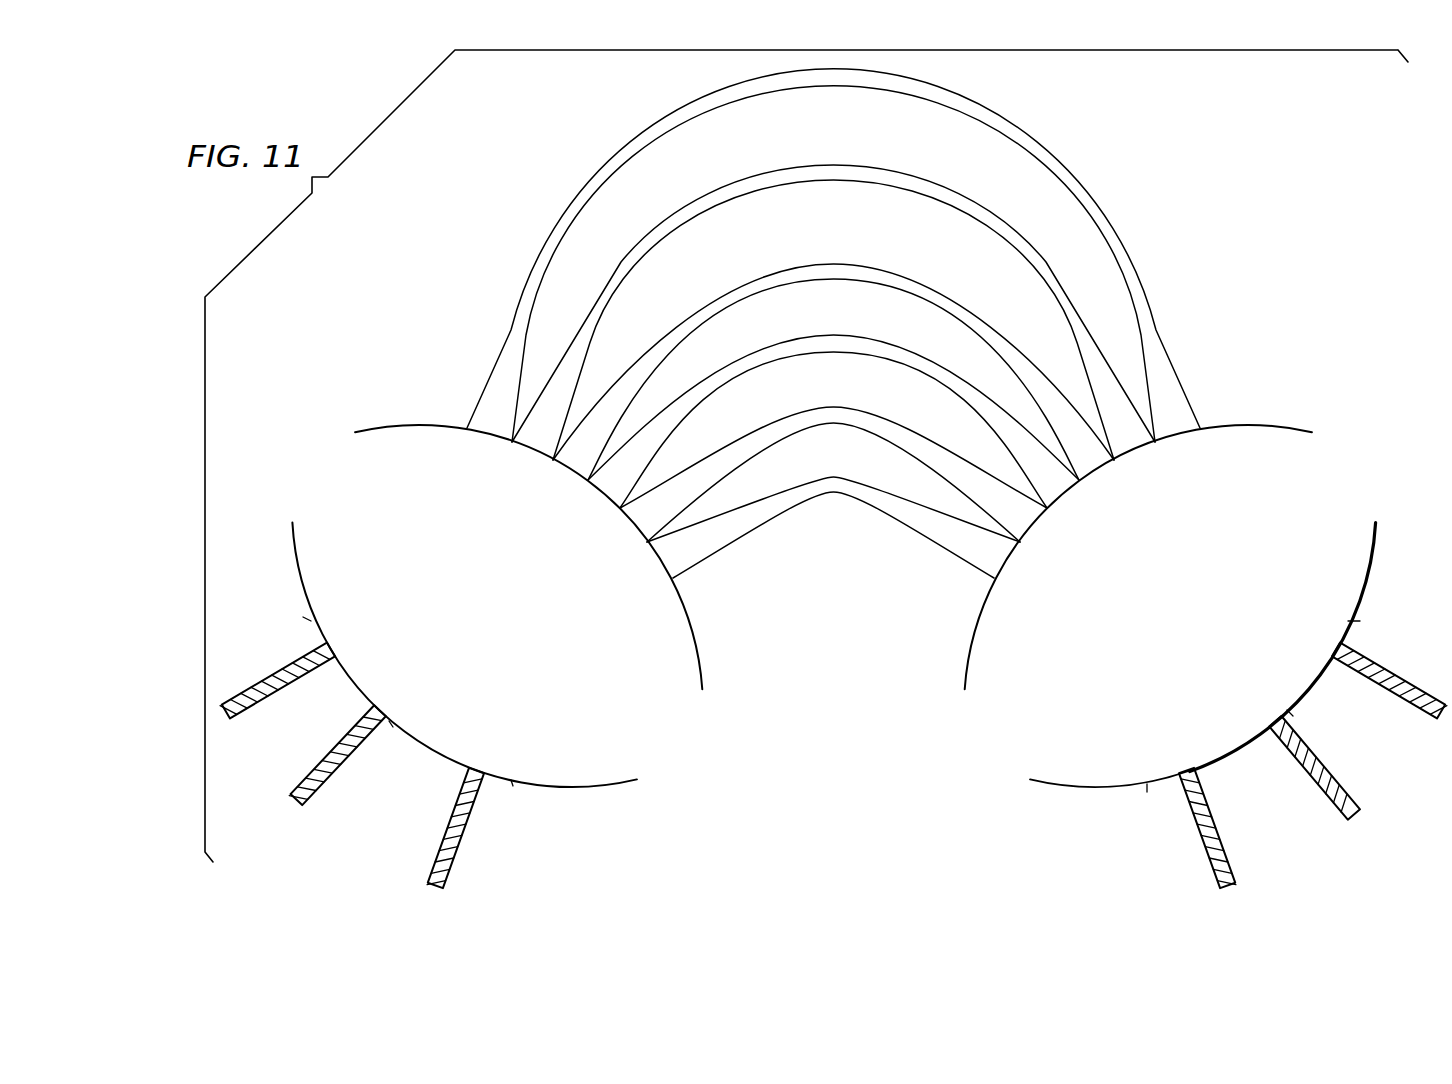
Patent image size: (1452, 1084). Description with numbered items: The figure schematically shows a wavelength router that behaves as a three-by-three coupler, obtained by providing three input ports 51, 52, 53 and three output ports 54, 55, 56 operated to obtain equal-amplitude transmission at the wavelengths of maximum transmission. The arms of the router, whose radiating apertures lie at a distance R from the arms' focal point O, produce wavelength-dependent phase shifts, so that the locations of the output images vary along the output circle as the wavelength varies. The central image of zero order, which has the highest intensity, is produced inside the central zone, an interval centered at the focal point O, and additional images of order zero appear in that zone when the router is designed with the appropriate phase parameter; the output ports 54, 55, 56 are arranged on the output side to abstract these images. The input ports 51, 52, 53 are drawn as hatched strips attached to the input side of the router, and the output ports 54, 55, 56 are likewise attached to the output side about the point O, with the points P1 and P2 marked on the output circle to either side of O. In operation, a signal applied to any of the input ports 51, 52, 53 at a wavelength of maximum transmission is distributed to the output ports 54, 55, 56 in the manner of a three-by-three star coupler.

The input port 51 is at (278, 689).
The input port 52 is at (344, 761).
The input port 53 is at (458, 841).
The output port 54 is at (1203, 837).
The output port 55 is at (1317, 790).
The output port 56 is at (1395, 701).
The point P1 is at (1155, 805).
The point P2 is at (1366, 630).
The focal point O is at (1296, 721).